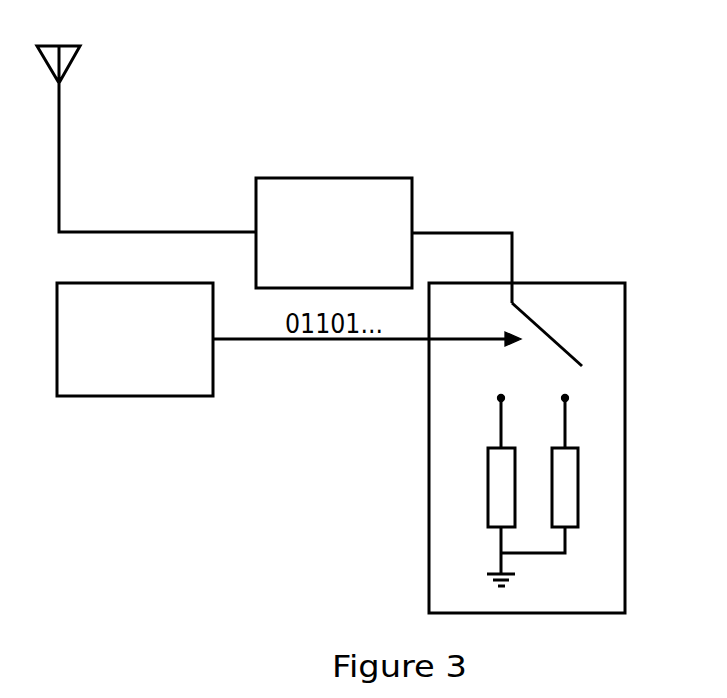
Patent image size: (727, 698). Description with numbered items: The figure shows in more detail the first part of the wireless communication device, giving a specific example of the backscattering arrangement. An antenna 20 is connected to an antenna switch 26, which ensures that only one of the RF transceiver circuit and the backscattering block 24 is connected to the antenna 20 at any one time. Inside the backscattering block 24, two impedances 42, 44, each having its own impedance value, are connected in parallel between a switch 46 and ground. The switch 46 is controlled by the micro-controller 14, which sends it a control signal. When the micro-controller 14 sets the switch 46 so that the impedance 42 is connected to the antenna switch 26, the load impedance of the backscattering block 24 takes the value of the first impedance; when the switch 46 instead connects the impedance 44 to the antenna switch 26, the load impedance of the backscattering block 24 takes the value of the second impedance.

The antenna 20 is at (78, 45).
The antenna switch 26 is at (383, 178).
The micro-controller 14 is at (168, 283).
The backscattering block 24 is at (616, 282).
The switch 46 is at (556, 338).
The impedance 42 is at (488, 465).
The impedance 44 is at (578, 496).